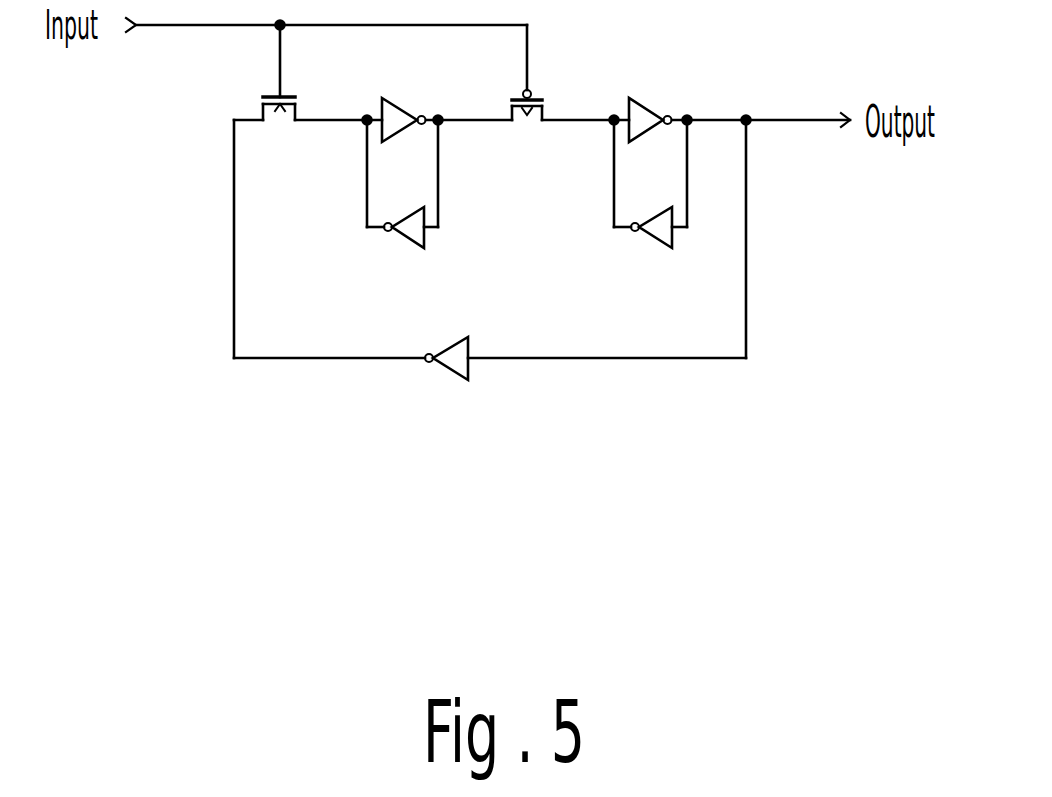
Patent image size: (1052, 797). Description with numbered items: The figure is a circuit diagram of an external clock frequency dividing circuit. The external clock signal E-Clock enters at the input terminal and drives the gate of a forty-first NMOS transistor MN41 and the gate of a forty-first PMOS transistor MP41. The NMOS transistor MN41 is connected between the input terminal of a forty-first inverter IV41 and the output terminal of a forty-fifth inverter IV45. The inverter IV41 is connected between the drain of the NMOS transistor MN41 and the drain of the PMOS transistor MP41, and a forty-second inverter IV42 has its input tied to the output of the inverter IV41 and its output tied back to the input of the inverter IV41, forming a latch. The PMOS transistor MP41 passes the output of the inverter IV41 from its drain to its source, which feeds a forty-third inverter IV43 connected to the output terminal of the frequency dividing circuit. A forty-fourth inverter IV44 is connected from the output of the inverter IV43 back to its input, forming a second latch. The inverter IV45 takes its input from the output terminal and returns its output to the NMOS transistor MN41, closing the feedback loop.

The 41th NMOS transistor MN41 is at (278, 98).
The 41th PMOS transistor MP41 is at (526, 99).
The 41th inverter IV41 is at (403, 143).
The 42th inverter IV42 is at (402, 207).
The 43th inverter IV43 is at (650, 143).
The 44th inverter IV44 is at (650, 207).
The 45th inverter IV45 is at (490, 382).